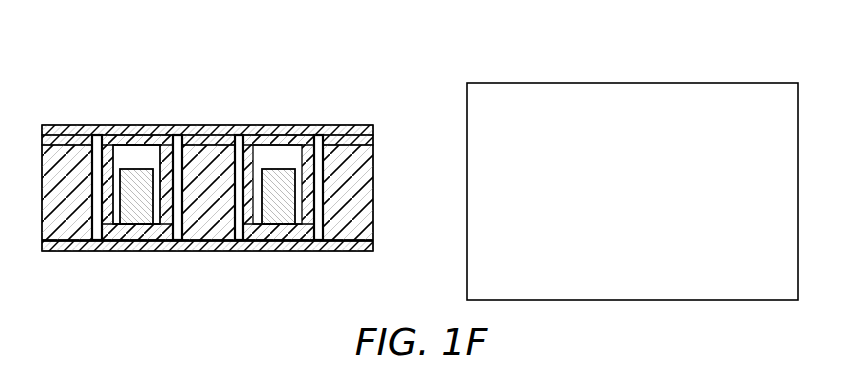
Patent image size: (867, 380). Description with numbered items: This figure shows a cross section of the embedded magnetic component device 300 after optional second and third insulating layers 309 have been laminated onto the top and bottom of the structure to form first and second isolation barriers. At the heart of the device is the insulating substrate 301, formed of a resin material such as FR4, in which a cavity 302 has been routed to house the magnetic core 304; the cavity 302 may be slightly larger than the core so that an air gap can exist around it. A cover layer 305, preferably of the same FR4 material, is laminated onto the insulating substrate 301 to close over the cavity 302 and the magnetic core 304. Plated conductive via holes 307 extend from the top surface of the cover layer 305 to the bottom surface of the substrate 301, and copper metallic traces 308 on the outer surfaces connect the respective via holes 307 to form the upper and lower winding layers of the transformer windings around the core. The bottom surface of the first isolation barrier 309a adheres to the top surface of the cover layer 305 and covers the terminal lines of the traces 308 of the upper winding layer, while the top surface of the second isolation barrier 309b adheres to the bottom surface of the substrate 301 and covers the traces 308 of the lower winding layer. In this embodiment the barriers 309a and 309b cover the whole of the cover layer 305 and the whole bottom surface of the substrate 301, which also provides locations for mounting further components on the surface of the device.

The embedded magnetic component device 300 is at (244, 88).
The insulating substrate 301 is at (207, 150).
The cavity 302 is at (148, 155).
The magnetic core 304 is at (148, 220).
The cover layer 305 is at (348, 140).
The conductive via holes 307 is at (97, 234).
The metallic traces 308 is at (113, 127).
The insulating layers 309 is at (495, 98).
The first isolation barrier 309a is at (68, 125).
The second isolation barrier 309b is at (208, 252).